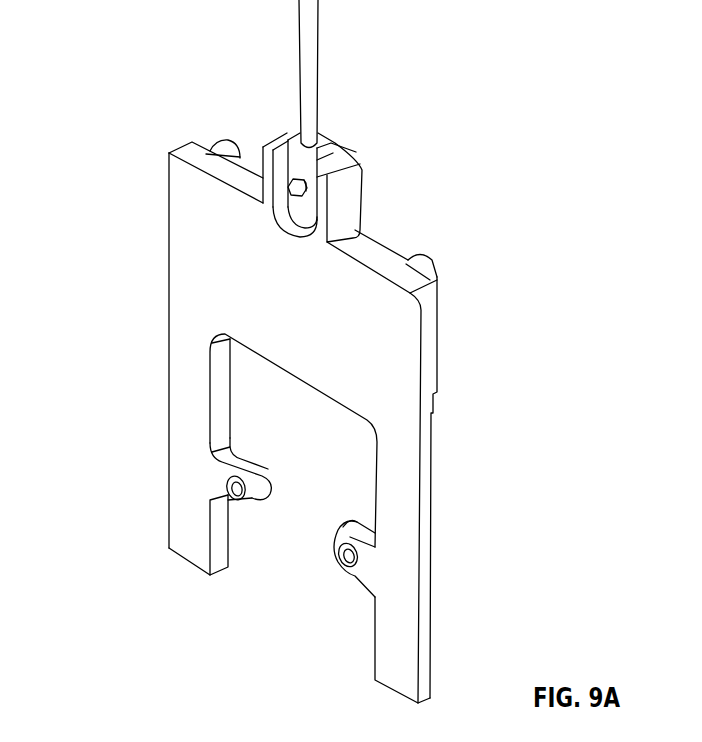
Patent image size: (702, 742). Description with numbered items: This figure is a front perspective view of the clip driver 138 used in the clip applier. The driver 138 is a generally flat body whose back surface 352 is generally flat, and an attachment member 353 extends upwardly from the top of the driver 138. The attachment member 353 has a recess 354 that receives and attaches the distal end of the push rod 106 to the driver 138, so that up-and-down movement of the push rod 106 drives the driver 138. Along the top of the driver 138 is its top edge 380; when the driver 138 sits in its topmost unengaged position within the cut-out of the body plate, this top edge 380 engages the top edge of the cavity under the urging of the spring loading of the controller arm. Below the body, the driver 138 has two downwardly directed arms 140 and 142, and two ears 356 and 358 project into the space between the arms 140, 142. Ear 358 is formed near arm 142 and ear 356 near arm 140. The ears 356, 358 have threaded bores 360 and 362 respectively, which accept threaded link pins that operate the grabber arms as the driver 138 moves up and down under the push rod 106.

The driver 138 is at (150, 49).
The push rod 106 is at (307, 52).
The back surface 352 is at (266, 428).
The attachment member 353 is at (349, 167).
The recess 354 is at (340, 150).
The top edge 380 is at (388, 272).
The ear 358 is at (267, 462).
The threaded bore 362 is at (238, 491).
The ear 356 is at (312, 575).
The threaded bore 360 is at (345, 568).
The arm 142 is at (180, 543).
The arm 140 is at (397, 680).